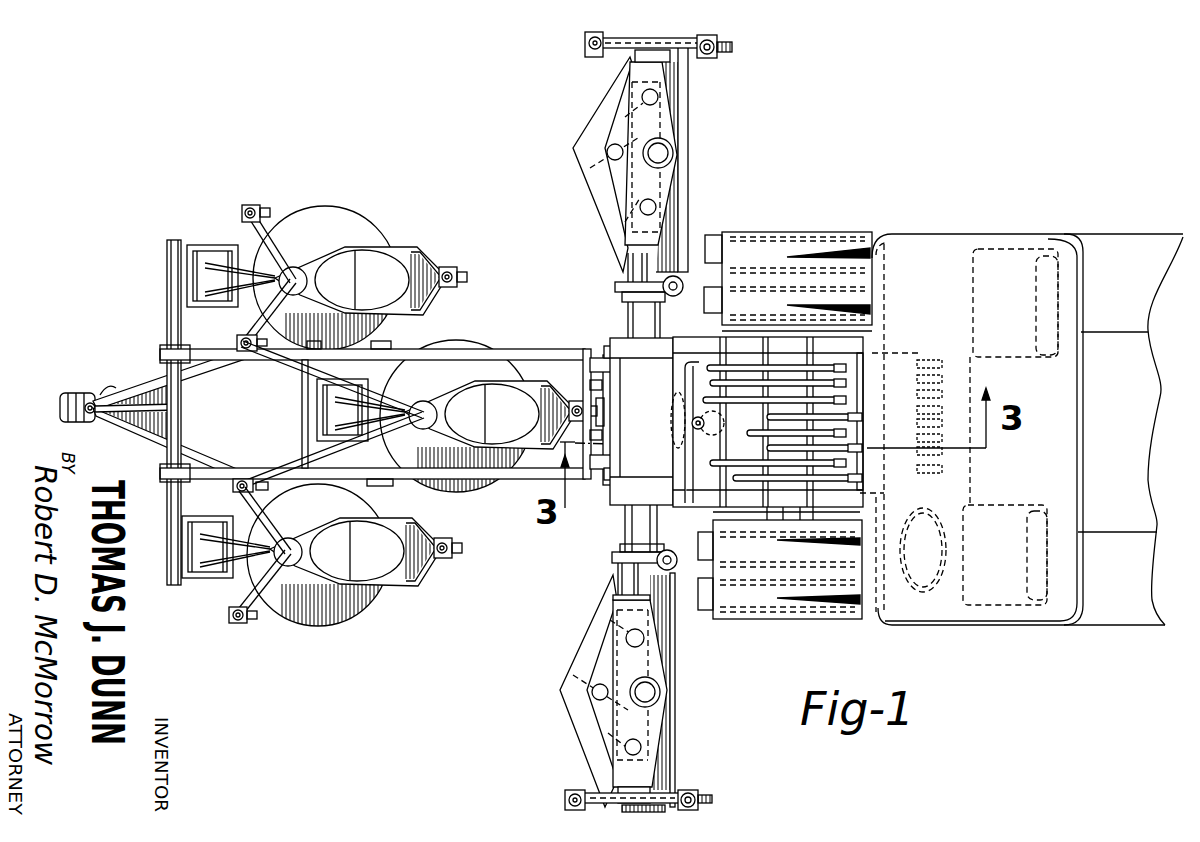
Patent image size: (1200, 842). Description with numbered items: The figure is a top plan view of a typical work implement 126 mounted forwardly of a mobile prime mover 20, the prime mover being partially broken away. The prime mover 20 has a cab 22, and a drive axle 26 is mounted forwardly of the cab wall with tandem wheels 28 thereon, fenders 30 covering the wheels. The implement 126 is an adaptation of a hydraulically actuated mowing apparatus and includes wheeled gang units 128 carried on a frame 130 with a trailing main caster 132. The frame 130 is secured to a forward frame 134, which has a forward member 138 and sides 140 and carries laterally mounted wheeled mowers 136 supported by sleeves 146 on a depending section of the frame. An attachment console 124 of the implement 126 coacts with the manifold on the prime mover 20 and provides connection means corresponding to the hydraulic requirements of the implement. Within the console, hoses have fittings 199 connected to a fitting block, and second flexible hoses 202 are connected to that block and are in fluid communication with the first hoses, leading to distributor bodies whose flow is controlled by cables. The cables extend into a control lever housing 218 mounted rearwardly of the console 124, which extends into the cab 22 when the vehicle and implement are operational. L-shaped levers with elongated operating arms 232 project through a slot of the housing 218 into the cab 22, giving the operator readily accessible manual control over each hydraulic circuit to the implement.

The mobile prime mover 20 is at (1136, 630).
The cab 22 is at (1036, 616).
The drive axle 26 is at (795, 521).
The tandem wheels 28 is at (705, 604).
The fenders 30 is at (765, 601).
The attachment console 124 is at (780, 331).
The work implement 126 is at (471, 498).
The wheeled gang units 128 is at (324, 635).
The frame 130 is at (521, 490).
The trailing main caster 132 is at (70, 383).
The forward frame 134 is at (618, 508).
The wheeled mowers 136 is at (572, 731).
The forward member 138 is at (568, 380).
The sides 140 is at (613, 340).
The sleeves 146 is at (606, 344).
The fittings 199 is at (903, 422).
The second flexible hoses 202 is at (868, 505).
The control lever housing 218 is at (897, 352).
The operating arms 232 is at (933, 362).